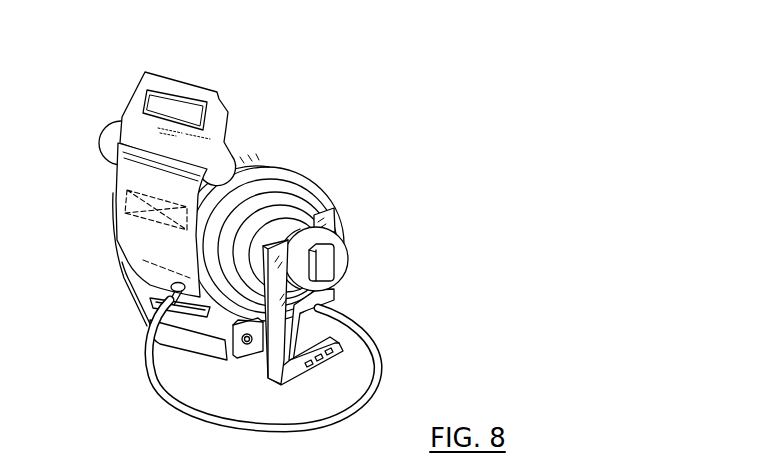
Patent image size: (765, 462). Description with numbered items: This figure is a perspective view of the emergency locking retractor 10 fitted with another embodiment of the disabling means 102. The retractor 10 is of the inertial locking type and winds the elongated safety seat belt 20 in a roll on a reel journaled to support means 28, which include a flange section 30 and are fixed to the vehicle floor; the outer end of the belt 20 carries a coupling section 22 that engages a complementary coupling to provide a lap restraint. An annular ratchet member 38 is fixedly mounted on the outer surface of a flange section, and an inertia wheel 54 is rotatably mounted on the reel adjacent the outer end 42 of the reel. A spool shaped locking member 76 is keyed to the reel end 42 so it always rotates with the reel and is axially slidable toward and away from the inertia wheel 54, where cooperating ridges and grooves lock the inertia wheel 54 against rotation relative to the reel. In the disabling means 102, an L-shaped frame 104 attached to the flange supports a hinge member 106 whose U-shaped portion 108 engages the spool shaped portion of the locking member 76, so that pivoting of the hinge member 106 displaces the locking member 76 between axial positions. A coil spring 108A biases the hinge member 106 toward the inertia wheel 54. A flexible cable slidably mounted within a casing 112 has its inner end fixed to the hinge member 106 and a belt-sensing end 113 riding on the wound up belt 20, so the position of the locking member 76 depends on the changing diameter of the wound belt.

The emergency locking retractor 10 is at (100, 98).
The safety seat belt 20 is at (124, 197).
The coupling section 22 is at (185, 82).
The support means 28 is at (187, 348).
The flange section 30 is at (123, 283).
The annular ratchet member 38 is at (273, 168).
The outer end of the reel 42 is at (340, 258).
The inertia wheel 54 is at (292, 197).
The locking member 76 is at (306, 210).
The disabling means 102 is at (397, 280).
The L-shaped frame 104 is at (279, 383).
The hinge member 106 is at (236, 366).
The U-shaped portion 108 is at (336, 217).
The coil spring 108A is at (330, 354).
The casing 112 is at (358, 397).
The belt-sensing end 113 is at (168, 289).